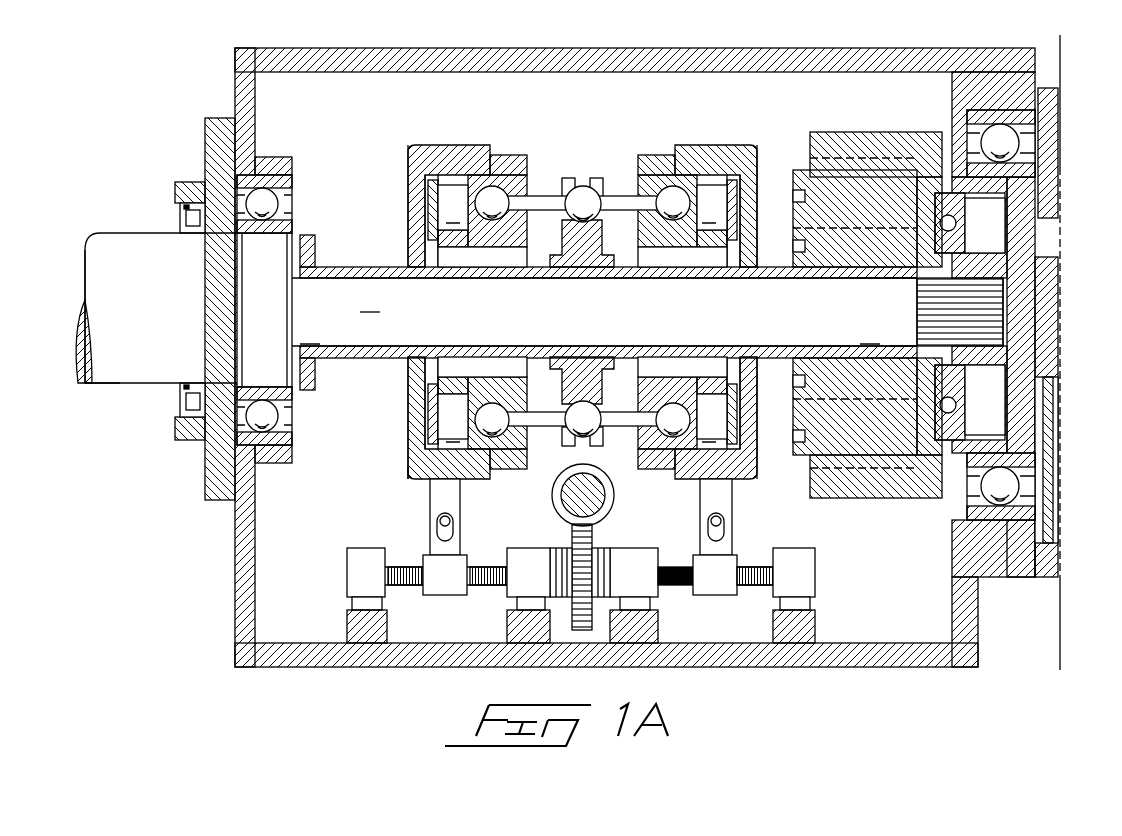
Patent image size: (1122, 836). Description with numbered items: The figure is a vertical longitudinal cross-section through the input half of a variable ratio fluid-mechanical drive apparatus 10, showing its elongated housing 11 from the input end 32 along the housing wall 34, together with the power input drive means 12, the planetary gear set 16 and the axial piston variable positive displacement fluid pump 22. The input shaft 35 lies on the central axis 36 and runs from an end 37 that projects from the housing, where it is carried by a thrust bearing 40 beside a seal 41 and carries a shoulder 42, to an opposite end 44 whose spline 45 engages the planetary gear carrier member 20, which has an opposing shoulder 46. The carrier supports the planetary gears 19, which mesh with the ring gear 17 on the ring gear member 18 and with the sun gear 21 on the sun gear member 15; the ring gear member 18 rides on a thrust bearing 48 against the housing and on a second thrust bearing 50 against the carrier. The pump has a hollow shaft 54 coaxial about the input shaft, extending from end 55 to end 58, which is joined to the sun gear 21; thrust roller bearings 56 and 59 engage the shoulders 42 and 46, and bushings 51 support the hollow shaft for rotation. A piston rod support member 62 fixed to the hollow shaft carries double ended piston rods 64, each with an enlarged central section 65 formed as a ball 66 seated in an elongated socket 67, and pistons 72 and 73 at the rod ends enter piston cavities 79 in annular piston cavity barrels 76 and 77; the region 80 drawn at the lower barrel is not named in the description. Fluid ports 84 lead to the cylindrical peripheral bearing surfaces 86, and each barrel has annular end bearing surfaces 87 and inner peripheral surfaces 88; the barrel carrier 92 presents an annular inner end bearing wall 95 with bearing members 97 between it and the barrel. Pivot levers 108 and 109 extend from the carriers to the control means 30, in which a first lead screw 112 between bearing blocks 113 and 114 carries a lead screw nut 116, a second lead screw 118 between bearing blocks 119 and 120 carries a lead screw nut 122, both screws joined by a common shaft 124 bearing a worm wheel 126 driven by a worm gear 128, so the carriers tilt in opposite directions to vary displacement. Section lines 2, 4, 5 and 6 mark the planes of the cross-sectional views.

The variable ratio fluid-mechanical drive apparatus 10 is at (224, 59).
The housing 11 is at (708, 48).
The power input drive means 12 is at (128, 233).
The sun gear member 15 is at (836, 346).
The planetary gear set 16 is at (852, 516).
The ring gear 17 is at (810, 134).
The ring gear member 18 is at (924, 128).
The planetary gears 19 is at (796, 178).
The planetary gear carrier member 20 is at (1000, 230).
The sun gear 21 is at (800, 372).
The axial piston variable positive displacement fluid pump 22 is at (680, 144).
The control means 30 is at (356, 534).
The input end 32 is at (205, 463).
The housing wall 34 is at (752, 668).
The input shaft 35 is at (545, 314).
The central axis 36 is at (70, 305).
The end 37 is at (100, 386).
The thrust bearing 40 is at (292, 182).
The seal 41 is at (178, 400).
The shoulder 42 is at (290, 318).
The opposite end 44 is at (1017, 303).
The spline 45 is at (1008, 328).
The shoulder 46 is at (912, 280).
The thrust bearing 48 is at (1012, 132).
The second thrust bearing 50 is at (958, 212).
The bushings 51 is at (310, 344).
The hollow shaft 54 is at (375, 362).
The end 55 is at (318, 252).
The thrust roller bearing 56 is at (318, 376).
The end 58 is at (862, 278).
The thrust roller bearing 59 is at (908, 346).
The piston rod support member 62 is at (562, 380).
The double ended piston rods 64 is at (548, 197).
The enlarged central section 65 is at (596, 178).
The ball 66 is at (594, 204).
The elongated socket 67 is at (568, 178).
The piston 72 is at (470, 192).
The piston 73 is at (712, 311).
The annular piston cavity barrel 76 is at (486, 248).
The annular piston cavity barrel 77 is at (680, 248).
The piston cavities 79 is at (581, 322).
The ball socket 80 is at (642, 476).
The fluid ports 84 is at (430, 168).
The cylindrical peripheral bearing surfaces 86 is at (482, 160).
The annular end bearing surfaces 87 is at (432, 190).
The inner peripheral surfaces 88 is at (450, 250).
The barrel carrier 92 is at (408, 478).
The annular inner end bearing wall 95 is at (436, 224).
The bearing members 97 is at (434, 208).
The pivot lever 108 is at (462, 512).
The pivot lever 109 is at (732, 506).
The first lead screw 112 is at (420, 562).
The bearing block 113 is at (347, 580).
The bearing block 114 is at (512, 598).
The lead screw nut 116 is at (458, 584).
The lead screw 118 is at (740, 594).
The bearing block 119 is at (658, 594).
The bearing block 120 is at (815, 590).
The lead screw nut 122 is at (728, 584).
The common shaft 124 is at (616, 548).
The worm wheel 126 is at (572, 537).
The worm gear 128 is at (612, 502).
The section line 2 is at (370, 312).
The section line 4 is at (444, 130).
The section line 5 is at (580, 162).
The section line 6 is at (782, 122).